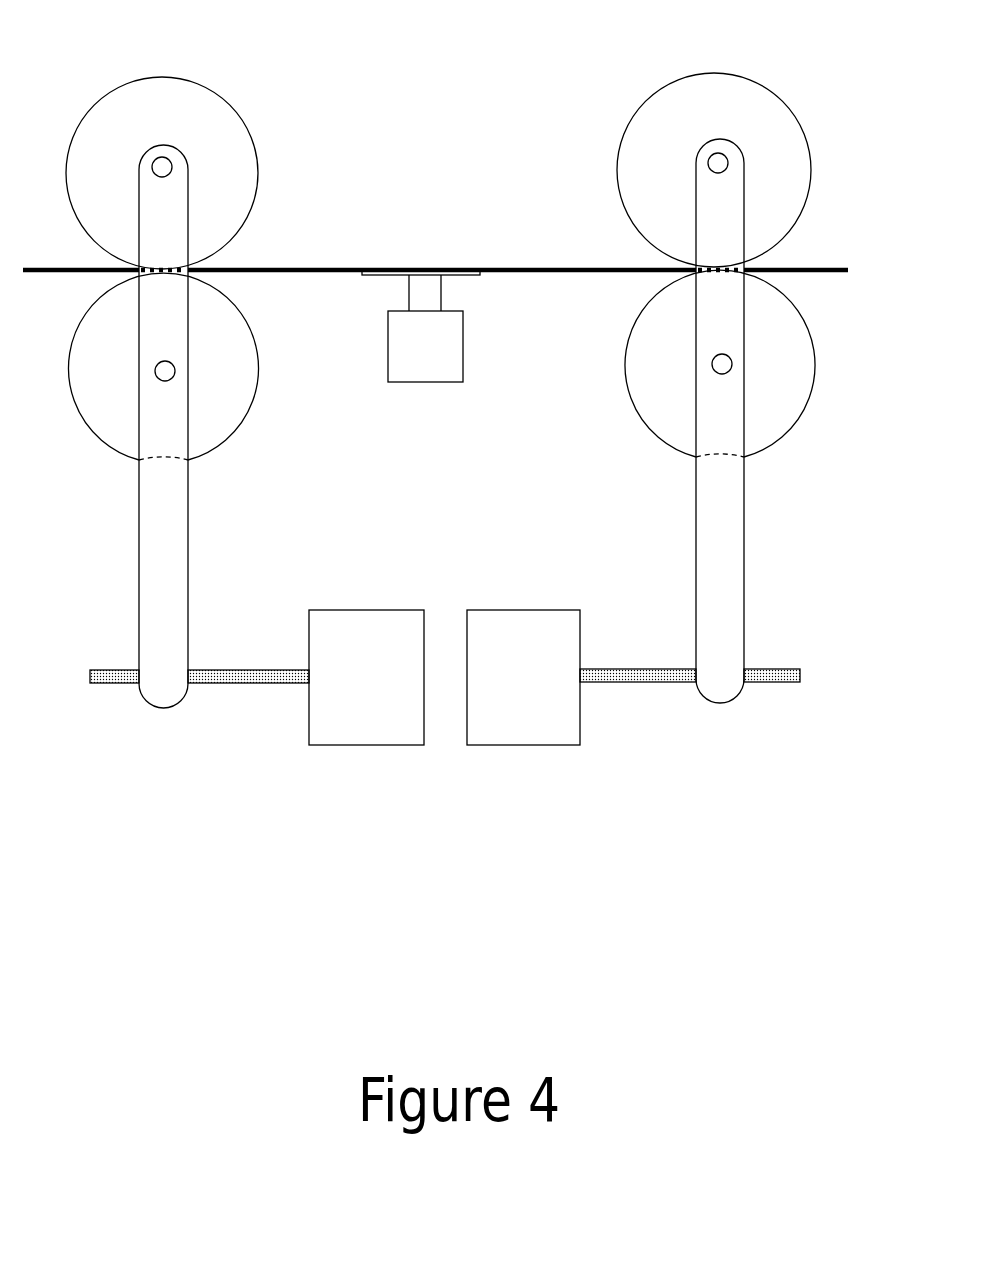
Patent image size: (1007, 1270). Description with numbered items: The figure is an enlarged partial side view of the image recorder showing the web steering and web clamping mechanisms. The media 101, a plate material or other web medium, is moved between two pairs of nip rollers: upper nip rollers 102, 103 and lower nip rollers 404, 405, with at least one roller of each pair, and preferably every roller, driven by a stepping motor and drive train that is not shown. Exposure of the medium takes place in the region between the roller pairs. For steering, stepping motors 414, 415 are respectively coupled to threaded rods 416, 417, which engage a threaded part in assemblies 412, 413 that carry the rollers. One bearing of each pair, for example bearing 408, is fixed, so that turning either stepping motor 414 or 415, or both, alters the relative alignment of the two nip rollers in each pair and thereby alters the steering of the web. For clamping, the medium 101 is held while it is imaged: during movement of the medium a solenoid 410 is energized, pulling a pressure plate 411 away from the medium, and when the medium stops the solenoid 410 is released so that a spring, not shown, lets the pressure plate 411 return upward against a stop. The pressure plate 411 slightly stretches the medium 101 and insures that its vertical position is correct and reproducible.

The media 101 is at (772, 265).
The upper nip roller 102 is at (165, 75).
The upper nip roller 103 is at (722, 69).
The lower nip roller 404 is at (255, 345).
The lower nip roller 405 is at (731, 359).
The bearing 408 is at (175, 366).
The solenoid 410 is at (463, 347).
The pressure plate 411 is at (469, 274).
The assembly 412 is at (190, 600).
The assembly 413 is at (748, 592).
The stepping motor 414 is at (368, 610).
The stepping motor 415 is at (520, 610).
The threaded rod 416 is at (95, 670).
The threaded rod 417 is at (765, 668).